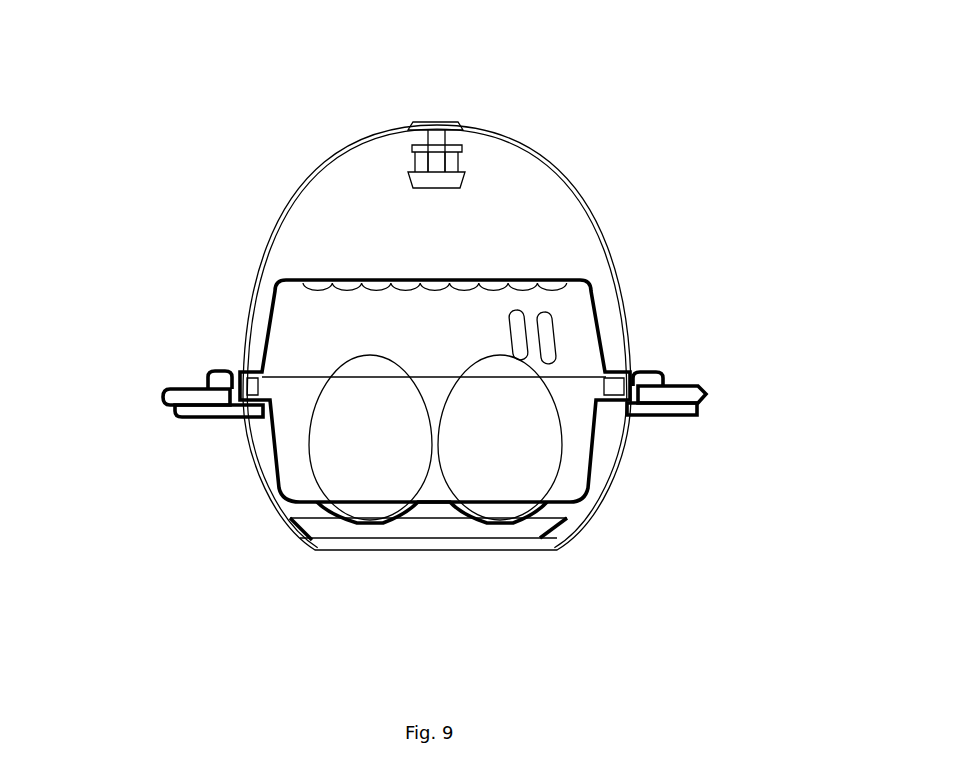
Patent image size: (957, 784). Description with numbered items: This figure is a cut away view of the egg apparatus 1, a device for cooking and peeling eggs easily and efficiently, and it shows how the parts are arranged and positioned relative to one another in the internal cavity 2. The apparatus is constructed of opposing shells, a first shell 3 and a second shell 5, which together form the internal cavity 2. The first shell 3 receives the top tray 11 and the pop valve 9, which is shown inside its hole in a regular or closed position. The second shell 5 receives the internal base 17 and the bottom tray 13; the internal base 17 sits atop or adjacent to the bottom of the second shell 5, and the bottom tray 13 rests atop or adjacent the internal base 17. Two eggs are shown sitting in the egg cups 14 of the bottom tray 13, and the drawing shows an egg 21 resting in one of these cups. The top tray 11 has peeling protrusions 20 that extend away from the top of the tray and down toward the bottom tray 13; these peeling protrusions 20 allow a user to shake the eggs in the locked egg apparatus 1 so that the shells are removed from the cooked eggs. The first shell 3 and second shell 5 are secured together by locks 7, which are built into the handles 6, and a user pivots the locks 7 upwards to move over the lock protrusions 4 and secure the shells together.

The egg apparatus 1 is at (237, 157).
The internal cavity 2 is at (514, 240).
The first shell 3 is at (565, 185).
The lock protrusions 4 is at (648, 378).
The second shell 5 is at (266, 470).
The handles 6 is at (685, 406).
The locks 7 is at (178, 397).
The pop valve 9 is at (457, 152).
The top tray 11 is at (572, 318).
The bottom tray 13 is at (582, 457).
The egg cups 14 is at (346, 518).
The internal base 17 is at (540, 538).
The peeling protrusions 20 is at (312, 285).
The egg 21 is at (506, 498).